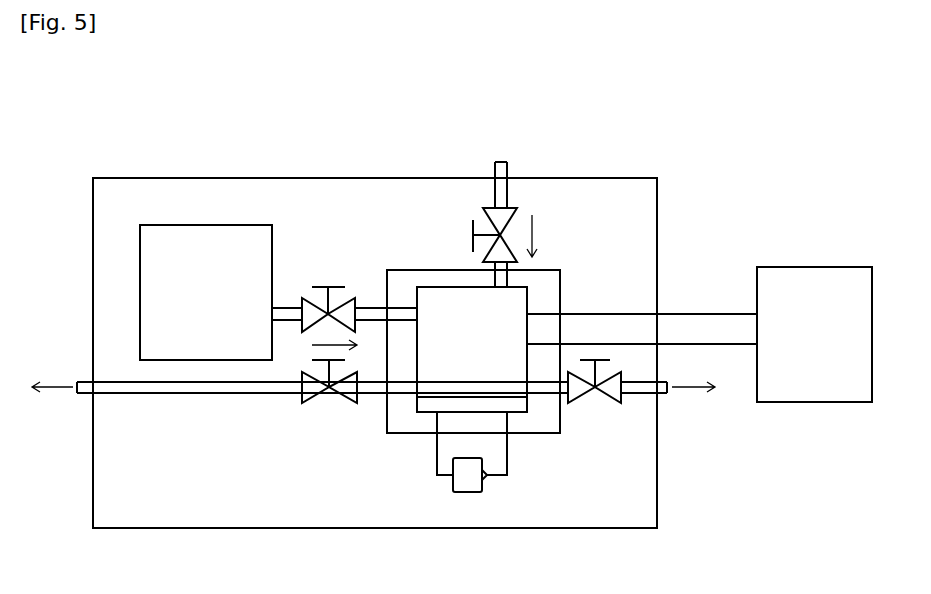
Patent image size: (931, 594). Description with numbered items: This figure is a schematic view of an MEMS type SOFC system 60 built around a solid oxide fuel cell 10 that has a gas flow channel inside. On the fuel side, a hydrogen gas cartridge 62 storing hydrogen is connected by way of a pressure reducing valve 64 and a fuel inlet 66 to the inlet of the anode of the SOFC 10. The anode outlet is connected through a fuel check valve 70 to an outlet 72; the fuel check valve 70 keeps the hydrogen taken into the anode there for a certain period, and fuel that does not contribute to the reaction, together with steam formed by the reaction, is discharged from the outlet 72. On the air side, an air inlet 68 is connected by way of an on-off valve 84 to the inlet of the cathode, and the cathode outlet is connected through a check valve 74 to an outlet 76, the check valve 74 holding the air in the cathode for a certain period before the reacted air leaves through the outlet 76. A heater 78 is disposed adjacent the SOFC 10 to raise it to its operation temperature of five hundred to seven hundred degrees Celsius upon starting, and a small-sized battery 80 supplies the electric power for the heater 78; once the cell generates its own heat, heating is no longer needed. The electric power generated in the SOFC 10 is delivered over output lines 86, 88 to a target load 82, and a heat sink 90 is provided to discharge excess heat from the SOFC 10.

The MEMS type SOFC system 60 is at (862, 97).
The hydrogen gas cartridge 62 is at (168, 225).
The pressure reducing valve 64 is at (307, 297).
The fuel inlet 66 is at (373, 308).
The solid oxide fuel cell 10 is at (440, 287).
The air inlet 68 is at (508, 167).
The on-off valve 84 is at (518, 215).
The target load 82 is at (832, 267).
The output line 86 is at (692, 313).
The output line 88 is at (722, 345).
The outlet 76 is at (667, 392).
The outlet 72 is at (90, 395).
The fuel check valve 70 is at (313, 403).
The small-sized battery 80 is at (469, 492).
The heater 78 is at (515, 408).
The heat sink 90 is at (550, 437).
The check valve 74 is at (610, 402).